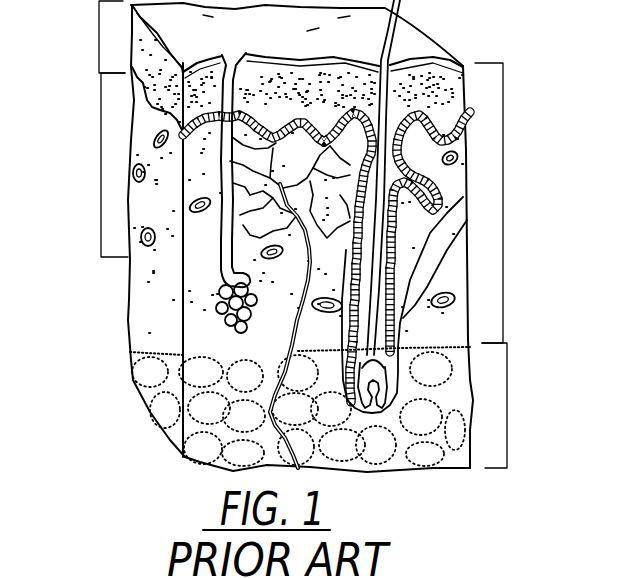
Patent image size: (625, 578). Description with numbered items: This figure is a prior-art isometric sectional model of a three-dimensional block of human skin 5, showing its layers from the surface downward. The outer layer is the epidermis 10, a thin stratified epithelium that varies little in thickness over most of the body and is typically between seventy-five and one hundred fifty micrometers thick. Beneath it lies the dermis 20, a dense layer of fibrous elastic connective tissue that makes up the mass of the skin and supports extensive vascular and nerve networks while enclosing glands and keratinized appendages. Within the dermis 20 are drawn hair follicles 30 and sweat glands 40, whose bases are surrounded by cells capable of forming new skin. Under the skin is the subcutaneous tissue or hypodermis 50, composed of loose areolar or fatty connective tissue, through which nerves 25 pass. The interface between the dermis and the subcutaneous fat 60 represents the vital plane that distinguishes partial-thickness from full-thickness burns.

The human skin 5 is at (505, 197).
The epidermis 10 is at (97, 37).
The dermis 20 is at (101, 170).
The hair follicles 30 is at (298, 351).
The sweat glands 40 is at (215, 292).
The hypodermis 50 is at (508, 407).
The subcutaneous fat 60 is at (167, 380).
The nerves 25 is at (270, 416).